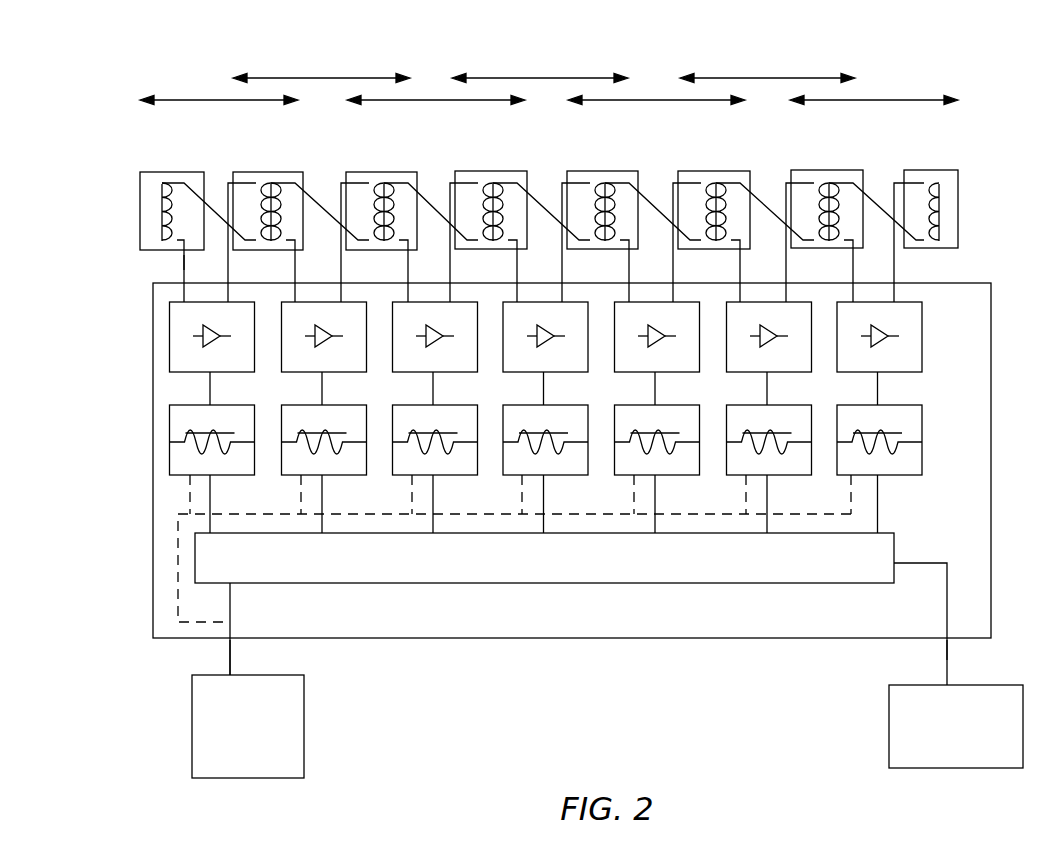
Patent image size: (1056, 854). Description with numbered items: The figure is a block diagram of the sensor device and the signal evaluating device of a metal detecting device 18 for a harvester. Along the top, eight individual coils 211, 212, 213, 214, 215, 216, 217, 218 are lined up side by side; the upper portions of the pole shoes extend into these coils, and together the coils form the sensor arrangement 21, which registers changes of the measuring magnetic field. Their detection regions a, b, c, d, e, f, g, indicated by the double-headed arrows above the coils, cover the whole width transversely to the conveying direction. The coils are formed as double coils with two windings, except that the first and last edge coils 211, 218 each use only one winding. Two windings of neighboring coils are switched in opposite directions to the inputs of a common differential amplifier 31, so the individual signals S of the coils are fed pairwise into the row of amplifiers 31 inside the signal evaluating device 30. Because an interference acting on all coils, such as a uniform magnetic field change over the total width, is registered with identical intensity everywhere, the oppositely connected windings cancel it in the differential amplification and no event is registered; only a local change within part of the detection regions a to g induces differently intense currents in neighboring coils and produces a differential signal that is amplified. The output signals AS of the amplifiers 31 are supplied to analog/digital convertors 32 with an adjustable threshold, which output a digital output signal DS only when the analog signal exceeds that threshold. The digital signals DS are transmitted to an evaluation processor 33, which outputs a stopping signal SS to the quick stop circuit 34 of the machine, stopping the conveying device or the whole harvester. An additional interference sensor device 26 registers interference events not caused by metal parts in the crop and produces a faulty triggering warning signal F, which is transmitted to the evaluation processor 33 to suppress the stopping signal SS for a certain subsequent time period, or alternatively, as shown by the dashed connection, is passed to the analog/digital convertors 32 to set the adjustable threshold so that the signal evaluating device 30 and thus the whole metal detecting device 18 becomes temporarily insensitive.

The metal detecting device 18 is at (1008, 158).
The sensor arrangement 21 is at (540, 213).
The coil 211 is at (172, 172).
The coil 212 is at (268, 172).
The coil 213 is at (383, 172).
The coil 214 is at (495, 172).
The coil 215 is at (607, 172).
The coil 216 is at (717, 172).
The coil 217 is at (822, 172).
The coil 218 is at (940, 170).
The interference sensor device 26 is at (304, 736).
The signal evaluating device 30 is at (985, 292).
The differential amplifier 31 is at (922, 325).
The analog/digital convertor 32 is at (922, 418).
The evaluation processor 33 is at (833, 584).
The quick stop circuit 34 is at (889, 720).
The detection region a is at (190, 100).
The detection region b is at (278, 78).
The detection region c is at (440, 100).
The detection region d is at (512, 77).
The detection region e is at (658, 100).
The detection region f is at (757, 77).
The detection region g is at (895, 100).
The individual signal S is at (228, 266).
The stopping signal SS is at (853, 258).
The output signal of the amplifier AS is at (767, 385).
The digital output signal DS is at (875, 490).
The faulty triggering warning signal F is at (232, 660).